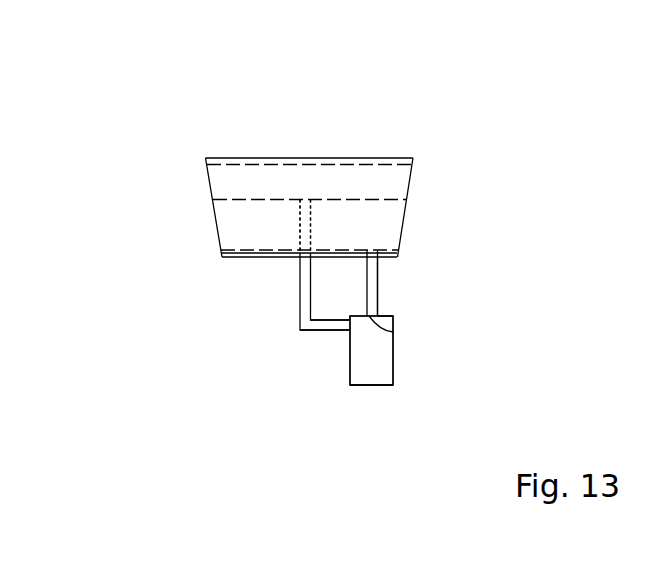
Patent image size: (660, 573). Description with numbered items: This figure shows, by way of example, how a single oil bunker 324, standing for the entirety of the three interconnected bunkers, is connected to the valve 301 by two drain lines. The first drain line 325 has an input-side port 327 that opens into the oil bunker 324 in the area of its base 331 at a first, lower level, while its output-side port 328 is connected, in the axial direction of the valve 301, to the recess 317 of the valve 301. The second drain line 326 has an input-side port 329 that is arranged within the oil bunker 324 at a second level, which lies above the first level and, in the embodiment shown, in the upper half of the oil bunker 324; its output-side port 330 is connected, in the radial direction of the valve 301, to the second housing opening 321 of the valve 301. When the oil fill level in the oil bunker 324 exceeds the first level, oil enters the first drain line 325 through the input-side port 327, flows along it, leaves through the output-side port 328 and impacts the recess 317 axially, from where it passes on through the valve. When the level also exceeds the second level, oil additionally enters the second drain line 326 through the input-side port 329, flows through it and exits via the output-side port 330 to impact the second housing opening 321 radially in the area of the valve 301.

The valve 301 is at (416, 352).
The recess 317 is at (395, 309).
The second housing opening 321 is at (339, 344).
The oil bunker 324 is at (192, 174).
The first drain line 325 is at (378, 273).
The second drain line 326 is at (305, 295).
The input-side port 327 is at (370, 250).
The output-side port 328 is at (393, 332).
The input-side port 329 is at (307, 200).
The output-side port 330 is at (350, 324).
The base 331 is at (240, 257).